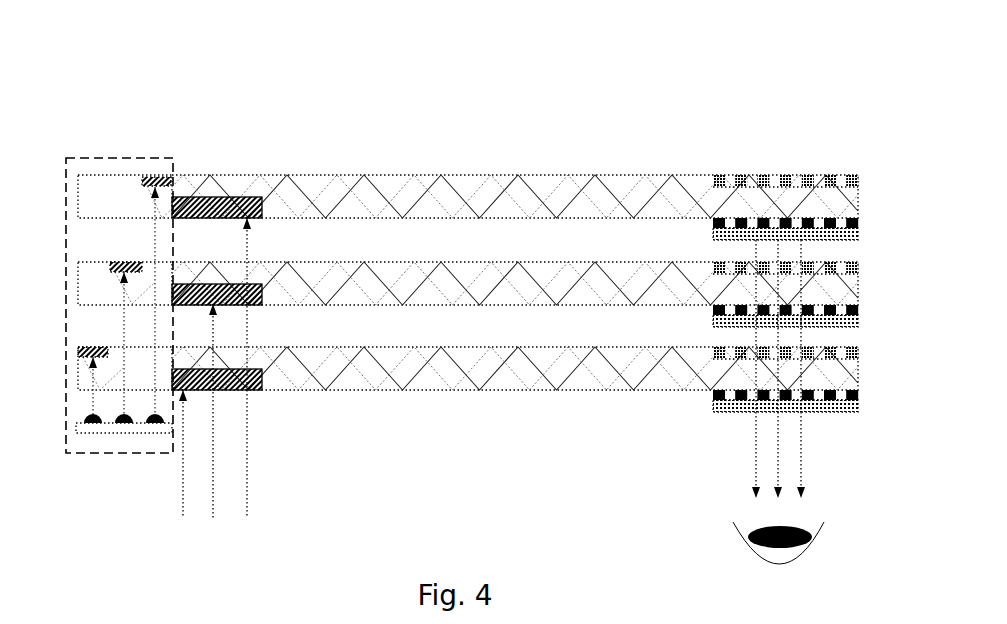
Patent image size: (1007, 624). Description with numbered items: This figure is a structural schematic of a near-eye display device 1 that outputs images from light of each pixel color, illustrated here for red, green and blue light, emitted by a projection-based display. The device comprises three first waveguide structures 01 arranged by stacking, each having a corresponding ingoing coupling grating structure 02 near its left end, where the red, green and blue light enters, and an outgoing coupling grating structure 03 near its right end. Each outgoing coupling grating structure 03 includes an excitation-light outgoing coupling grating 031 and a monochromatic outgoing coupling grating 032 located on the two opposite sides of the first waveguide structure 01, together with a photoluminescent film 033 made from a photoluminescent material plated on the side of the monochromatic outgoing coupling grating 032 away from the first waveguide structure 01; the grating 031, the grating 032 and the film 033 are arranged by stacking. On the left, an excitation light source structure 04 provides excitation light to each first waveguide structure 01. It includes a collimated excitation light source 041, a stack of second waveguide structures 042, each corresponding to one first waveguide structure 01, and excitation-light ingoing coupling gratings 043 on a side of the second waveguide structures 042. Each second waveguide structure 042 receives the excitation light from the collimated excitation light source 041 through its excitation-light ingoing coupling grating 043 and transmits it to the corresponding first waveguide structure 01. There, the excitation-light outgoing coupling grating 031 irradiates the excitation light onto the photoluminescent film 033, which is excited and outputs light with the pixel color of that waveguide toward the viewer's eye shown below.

The near-eye display device 1 is at (495, 110).
The first waveguide structure 01 is at (850, 197).
The ingoing coupling grating structure 02 is at (254, 368).
The outgoing coupling grating structure 03 is at (822, 294).
The excitation-light outgoing coupling grating 031 is at (858, 180).
The monochromatic outgoing coupling grating 032 is at (858, 222).
The photoluminescent film 033 is at (810, 322).
The excitation light source structure 04 is at (124, 158).
The collimated excitation light source 041 is at (76, 430).
The second waveguide structure 042 is at (92, 285).
The excitation-light ingoing coupling grating 043 is at (128, 262).